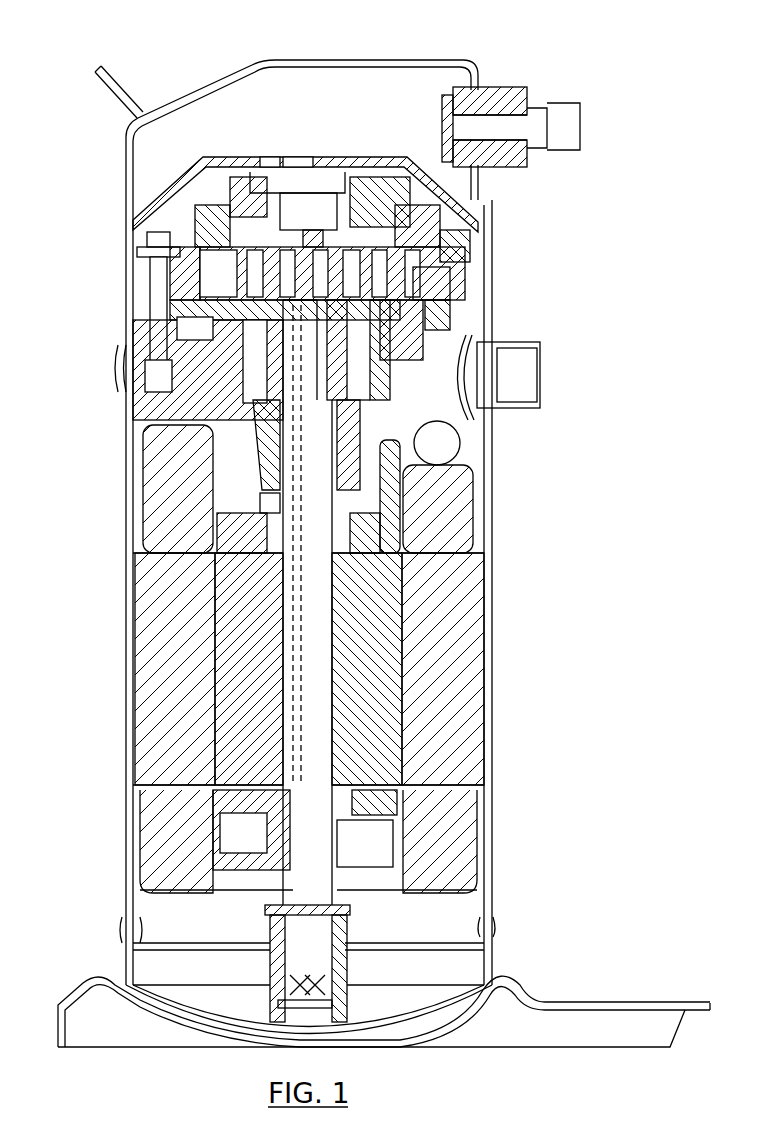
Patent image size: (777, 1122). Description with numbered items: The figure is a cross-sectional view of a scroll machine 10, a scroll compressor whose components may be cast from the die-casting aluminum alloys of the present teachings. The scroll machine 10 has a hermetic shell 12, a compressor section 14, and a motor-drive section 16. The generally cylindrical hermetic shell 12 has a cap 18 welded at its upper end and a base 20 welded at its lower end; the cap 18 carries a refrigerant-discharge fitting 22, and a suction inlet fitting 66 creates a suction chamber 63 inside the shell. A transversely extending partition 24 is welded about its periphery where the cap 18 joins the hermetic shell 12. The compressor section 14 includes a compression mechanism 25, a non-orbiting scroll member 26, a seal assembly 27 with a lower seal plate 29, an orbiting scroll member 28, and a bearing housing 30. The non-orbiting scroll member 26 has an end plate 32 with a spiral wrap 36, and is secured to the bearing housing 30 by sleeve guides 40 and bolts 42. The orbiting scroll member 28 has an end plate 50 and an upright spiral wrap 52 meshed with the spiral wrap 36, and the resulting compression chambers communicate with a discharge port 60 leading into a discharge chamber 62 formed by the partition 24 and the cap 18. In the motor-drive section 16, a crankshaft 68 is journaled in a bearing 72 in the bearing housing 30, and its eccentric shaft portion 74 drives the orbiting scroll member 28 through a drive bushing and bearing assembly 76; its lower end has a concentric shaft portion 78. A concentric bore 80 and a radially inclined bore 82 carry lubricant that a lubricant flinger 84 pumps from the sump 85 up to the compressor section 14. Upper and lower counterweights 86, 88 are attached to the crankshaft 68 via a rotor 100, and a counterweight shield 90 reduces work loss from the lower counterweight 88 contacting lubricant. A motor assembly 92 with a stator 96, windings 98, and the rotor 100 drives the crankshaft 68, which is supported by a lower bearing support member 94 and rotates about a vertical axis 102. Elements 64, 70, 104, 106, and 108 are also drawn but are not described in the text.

The scroll machine 10 is at (596, 44).
The hermetic shell 12 is at (493, 528).
The compressor section 14 is at (322, 186).
The motor-drive section 16 is at (148, 454).
The cap 18 is at (261, 62).
The base 20 is at (535, 992).
The refrigerant-discharge fitting 22 is at (527, 101).
The partition 24 is at (487, 183).
The compression mechanism 25 is at (462, 246).
The non-orbiting scroll member 26 is at (188, 230).
The seal assembly 27 is at (221, 174).
The orbiting scroll member 28 is at (178, 317).
The lower seal plate 29 is at (224, 200).
The bearing housing 30 is at (410, 420).
The end plate 32 is at (427, 228).
The spiral wrap 36 is at (380, 270).
The sleeve guides 40 is at (183, 314).
The bolts 42 is at (134, 240).
The end plate 50 is at (203, 322).
The spiral wrap 52 is at (337, 283).
The discharge port 60 is at (345, 212).
The discharge chamber 62 is at (367, 87).
The suction chamber 63 is at (452, 377).
The bearing housing 64 is at (470, 323).
The suction inlet fitting 66 is at (533, 408).
The crankshaft 68 is at (307, 635).
The bearing 70 is at (248, 517).
The bearing 72 is at (400, 466).
The eccentric shaft portion 74 is at (300, 542).
The drive bushing and bearing assembly 76 is at (243, 400).
The concentric shaft portion 78 is at (353, 973).
The concentric bore 80 is at (334, 856).
The radially inclined bore 82 is at (278, 463).
The lubricant flinger 84 is at (270, 971).
The sump 85 is at (465, 912).
The upper counterweight 86 is at (374, 516).
The lower counterweight 88 is at (233, 830).
The counterweight shield 90 is at (357, 877).
The motor assembly 92 is at (496, 610).
The lower bearing support member 94 is at (450, 950).
The stator 96 is at (147, 722).
The windings 98 is at (443, 837).
The rotor 100 is at (400, 722).
The vertical axis 102 is at (313, 1057).
The rotor 104 is at (383, 597).
The seal 106 is at (447, 300).
The support ring 108 is at (128, 886).